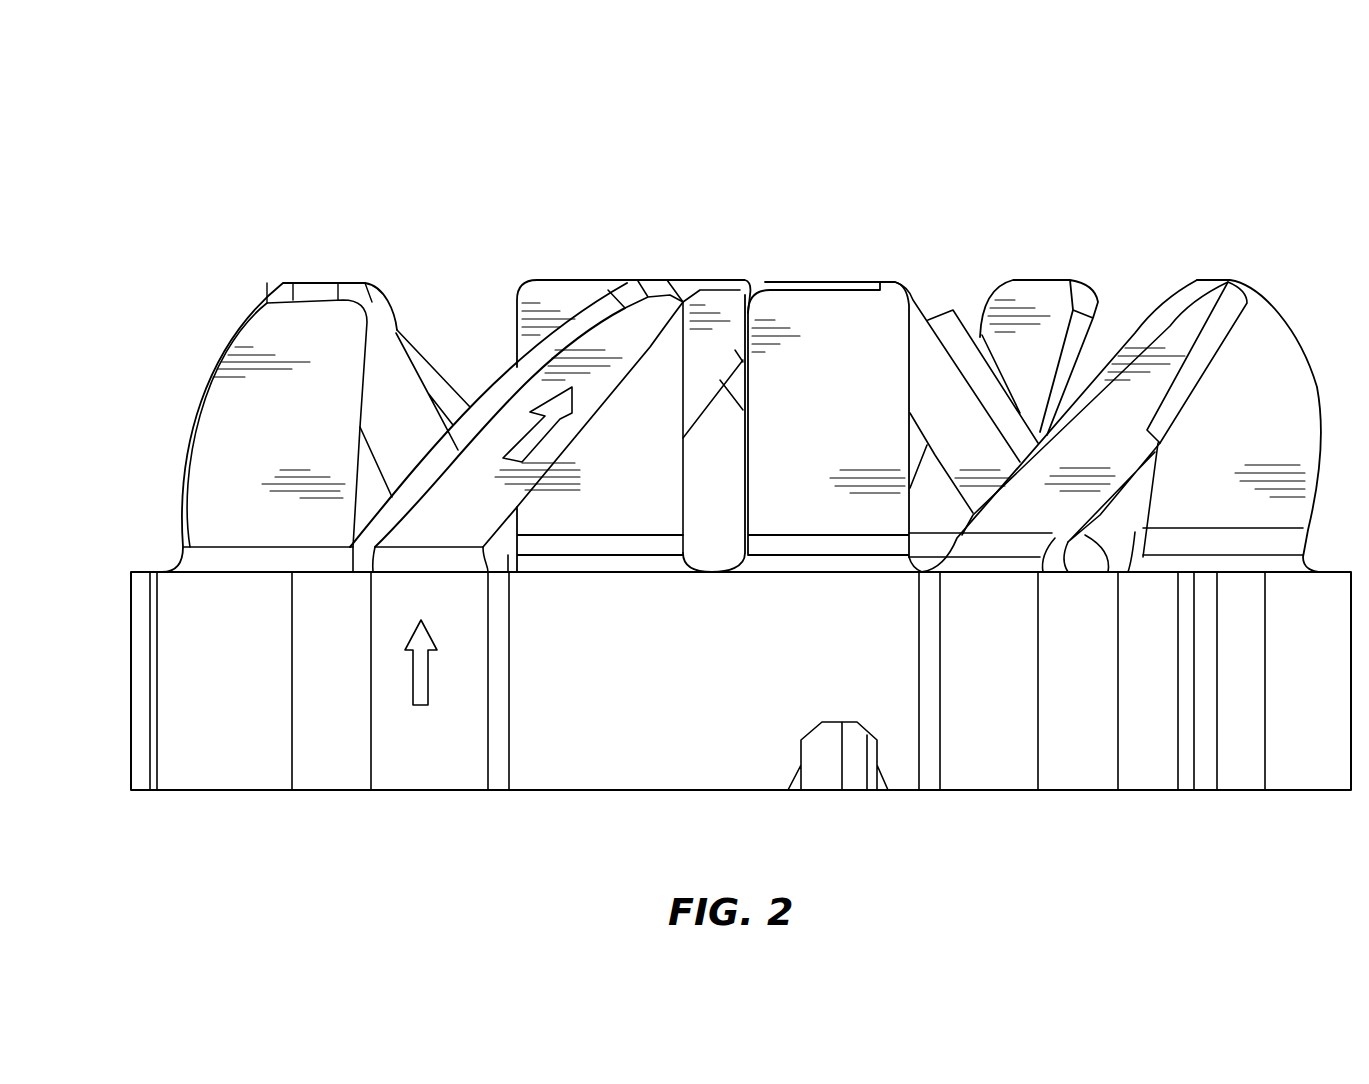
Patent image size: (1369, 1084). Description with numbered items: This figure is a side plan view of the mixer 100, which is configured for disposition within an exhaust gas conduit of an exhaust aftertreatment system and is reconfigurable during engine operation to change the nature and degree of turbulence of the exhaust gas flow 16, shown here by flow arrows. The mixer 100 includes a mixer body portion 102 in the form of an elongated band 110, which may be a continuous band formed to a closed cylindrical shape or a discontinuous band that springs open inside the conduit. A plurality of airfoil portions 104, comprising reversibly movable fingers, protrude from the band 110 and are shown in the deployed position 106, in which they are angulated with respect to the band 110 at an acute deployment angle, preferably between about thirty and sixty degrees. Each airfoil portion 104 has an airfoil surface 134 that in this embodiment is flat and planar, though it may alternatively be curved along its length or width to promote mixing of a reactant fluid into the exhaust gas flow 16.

The mixer 100 is at (998, 161).
The mixer body portion 102 is at (182, 667).
The airfoil portions 104 is at (222, 469).
The deployed position 106 is at (1235, 332).
The elongated band 110 is at (550, 748).
The airfoil surface 134 is at (347, 340).
The exhaust gas flow 16 is at (538, 430).